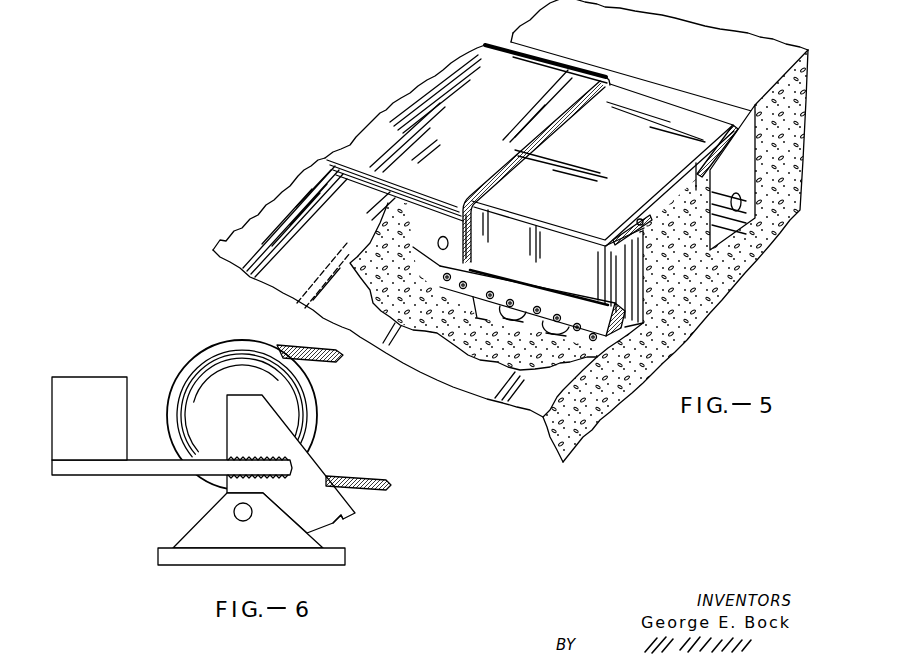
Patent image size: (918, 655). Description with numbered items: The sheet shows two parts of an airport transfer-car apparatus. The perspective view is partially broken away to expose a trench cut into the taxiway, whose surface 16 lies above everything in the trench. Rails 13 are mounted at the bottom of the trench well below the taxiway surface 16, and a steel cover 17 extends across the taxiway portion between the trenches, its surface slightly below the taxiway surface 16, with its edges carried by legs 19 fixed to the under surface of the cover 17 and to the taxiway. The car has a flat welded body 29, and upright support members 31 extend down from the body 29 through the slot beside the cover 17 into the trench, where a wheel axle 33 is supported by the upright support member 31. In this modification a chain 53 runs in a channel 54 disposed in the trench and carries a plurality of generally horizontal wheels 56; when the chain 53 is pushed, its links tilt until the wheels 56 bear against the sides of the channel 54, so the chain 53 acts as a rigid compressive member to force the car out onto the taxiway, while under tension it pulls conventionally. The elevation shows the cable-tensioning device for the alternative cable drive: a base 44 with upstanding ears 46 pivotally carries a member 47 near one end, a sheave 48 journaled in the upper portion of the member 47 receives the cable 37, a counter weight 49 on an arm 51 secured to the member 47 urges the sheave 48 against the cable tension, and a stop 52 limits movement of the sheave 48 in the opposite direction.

In FIG. 5, the rails 13 is at (740, 200).
In FIG. 5, the taxiway surface 16 is at (735, 69).
In FIG. 5, the cover 17 is at (636, 176).
In FIG. 5, the legs 19 is at (703, 176).
In FIG. 5, the body 29 is at (488, 129).
In FIG. 5, the upright support members 31 is at (455, 233).
In FIG. 5, the wheel axle 33 is at (424, 218).
In FIG. 6, the cable 37 is at (374, 477).
In FIG. 6, the base 44 is at (348, 561).
In FIG. 6, the upstanding ears 46 is at (205, 530).
In FIG. 6, the member 47 is at (304, 466).
In FIG. 6, the sheave 48 is at (288, 397).
In FIG. 6, the counter weight 49 is at (97, 420).
In FIG. 6, the arm 51 is at (152, 467).
In FIG. 6, the stop 52 is at (346, 518).
In FIG. 5, the chain 53 is at (530, 303).
In FIG. 5, the channel 54 is at (496, 293).
In FIG. 5, the wheels 56 is at (512, 322).